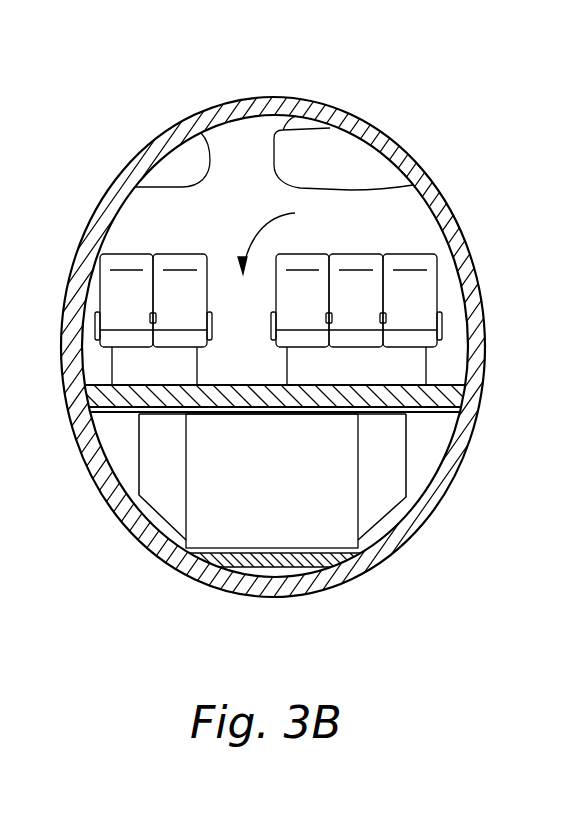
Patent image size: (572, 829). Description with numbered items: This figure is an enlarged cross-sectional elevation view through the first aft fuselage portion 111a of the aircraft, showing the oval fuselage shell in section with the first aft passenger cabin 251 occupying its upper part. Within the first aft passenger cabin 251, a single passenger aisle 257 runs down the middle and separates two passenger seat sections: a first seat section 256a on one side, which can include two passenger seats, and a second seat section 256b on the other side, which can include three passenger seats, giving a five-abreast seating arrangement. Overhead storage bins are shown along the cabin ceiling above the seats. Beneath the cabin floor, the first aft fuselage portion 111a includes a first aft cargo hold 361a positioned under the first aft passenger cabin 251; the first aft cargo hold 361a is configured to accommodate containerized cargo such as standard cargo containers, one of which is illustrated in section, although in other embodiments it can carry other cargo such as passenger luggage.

The first aft fuselage portion 111a is at (366, 120).
The first aft passenger cabin 251 is at (212, 198).
The first seat section 256a is at (128, 287).
The second seat section 256b is at (436, 282).
The passenger aisle 257 is at (286, 238).
The first aft cargo hold 361a is at (207, 474).